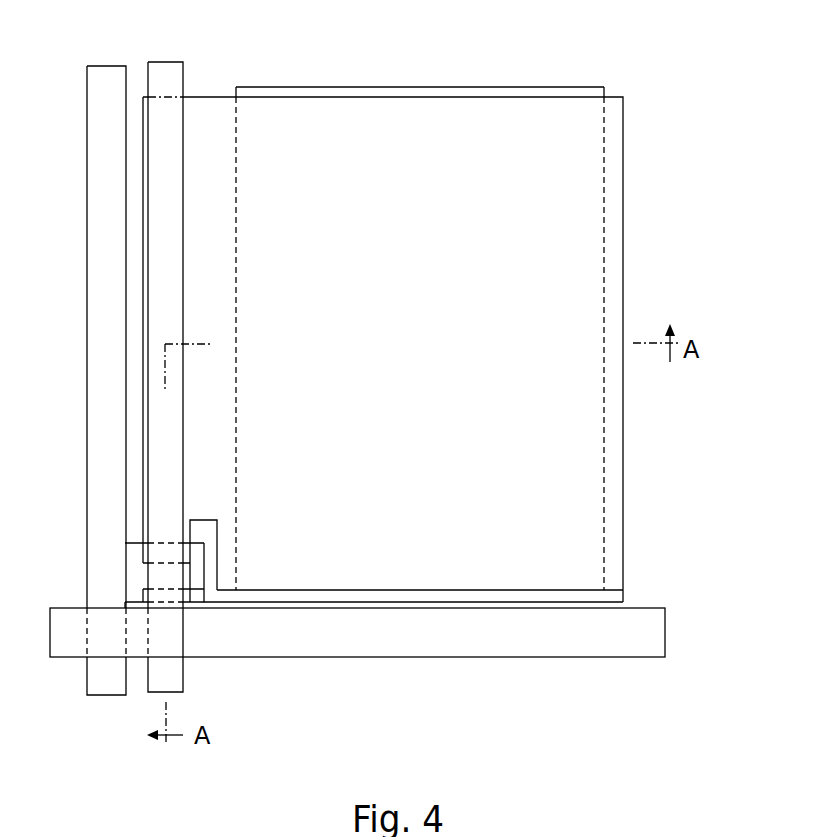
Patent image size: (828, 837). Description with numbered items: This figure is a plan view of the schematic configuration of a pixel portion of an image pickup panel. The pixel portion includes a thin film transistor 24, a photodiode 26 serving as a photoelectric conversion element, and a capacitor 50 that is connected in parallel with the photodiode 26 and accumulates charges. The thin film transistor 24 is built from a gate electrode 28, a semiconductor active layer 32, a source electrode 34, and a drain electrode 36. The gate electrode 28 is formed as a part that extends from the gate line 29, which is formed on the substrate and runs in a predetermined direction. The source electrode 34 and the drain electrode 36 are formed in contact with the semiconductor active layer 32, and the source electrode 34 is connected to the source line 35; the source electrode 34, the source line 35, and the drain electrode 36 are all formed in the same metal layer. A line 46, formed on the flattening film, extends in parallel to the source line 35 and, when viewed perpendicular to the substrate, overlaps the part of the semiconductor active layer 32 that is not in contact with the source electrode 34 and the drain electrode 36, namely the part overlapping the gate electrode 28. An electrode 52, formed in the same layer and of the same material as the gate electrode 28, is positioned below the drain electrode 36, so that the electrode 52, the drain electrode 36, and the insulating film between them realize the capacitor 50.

The thin film transistor 24 is at (214, 596).
The photodiode 26 is at (630, 406).
The gate electrode 28 is at (133, 572).
The gate line 29 is at (102, 276).
The semiconductor active layer 32 is at (168, 590).
The source electrode 34 is at (192, 598).
The source line 35 is at (503, 658).
The drain electrode 36 is at (142, 554).
The line 46 is at (176, 72).
The capacitor 50 is at (569, 86).
The electrode 52 is at (503, 88).